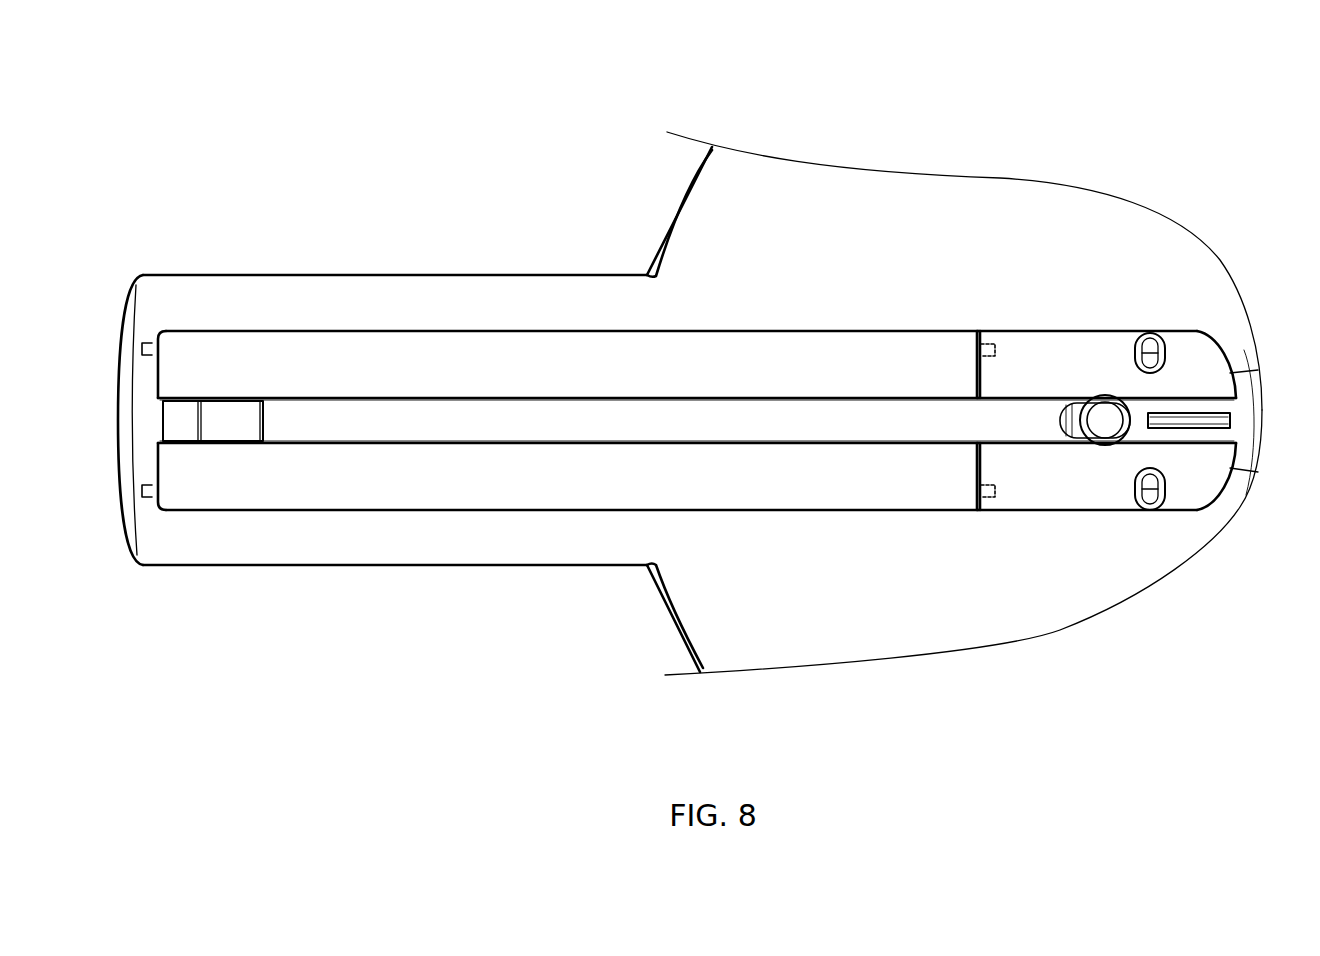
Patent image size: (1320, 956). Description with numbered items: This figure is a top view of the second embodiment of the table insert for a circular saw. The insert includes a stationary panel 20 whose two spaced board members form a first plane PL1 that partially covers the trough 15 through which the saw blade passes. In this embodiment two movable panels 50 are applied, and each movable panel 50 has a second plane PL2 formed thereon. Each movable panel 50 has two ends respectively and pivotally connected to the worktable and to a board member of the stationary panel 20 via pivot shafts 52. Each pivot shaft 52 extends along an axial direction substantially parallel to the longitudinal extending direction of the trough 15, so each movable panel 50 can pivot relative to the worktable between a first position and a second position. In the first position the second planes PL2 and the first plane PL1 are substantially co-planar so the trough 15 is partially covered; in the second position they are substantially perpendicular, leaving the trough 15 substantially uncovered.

The trough 15 is at (722, 422).
The stationary panel 20 is at (1236, 357).
The movable panel 50 is at (566, 312).
The pivot shaft 52 is at (143, 343).
The first plane PL1 is at (1078, 352).
The second plane PL2 is at (373, 360).